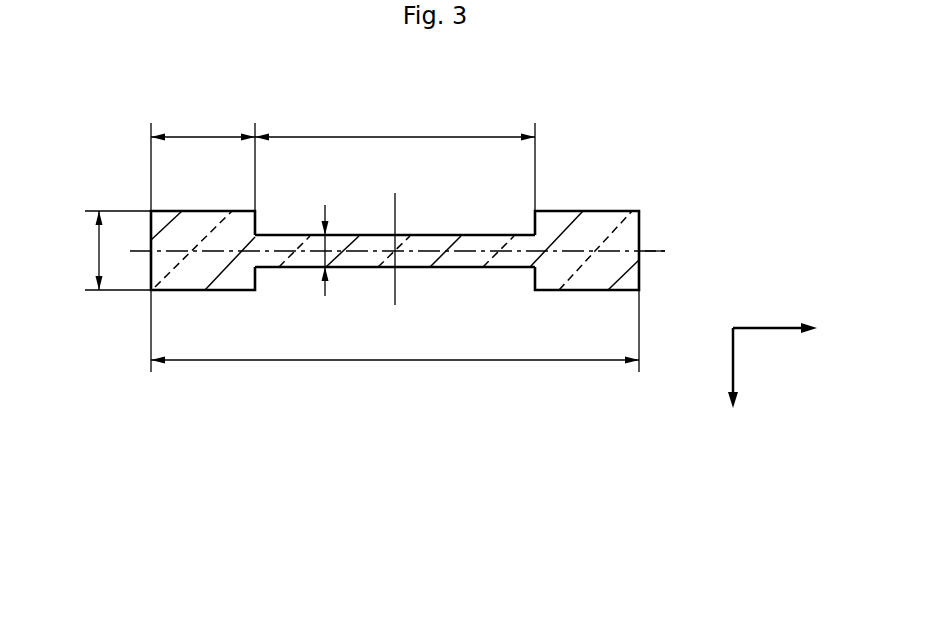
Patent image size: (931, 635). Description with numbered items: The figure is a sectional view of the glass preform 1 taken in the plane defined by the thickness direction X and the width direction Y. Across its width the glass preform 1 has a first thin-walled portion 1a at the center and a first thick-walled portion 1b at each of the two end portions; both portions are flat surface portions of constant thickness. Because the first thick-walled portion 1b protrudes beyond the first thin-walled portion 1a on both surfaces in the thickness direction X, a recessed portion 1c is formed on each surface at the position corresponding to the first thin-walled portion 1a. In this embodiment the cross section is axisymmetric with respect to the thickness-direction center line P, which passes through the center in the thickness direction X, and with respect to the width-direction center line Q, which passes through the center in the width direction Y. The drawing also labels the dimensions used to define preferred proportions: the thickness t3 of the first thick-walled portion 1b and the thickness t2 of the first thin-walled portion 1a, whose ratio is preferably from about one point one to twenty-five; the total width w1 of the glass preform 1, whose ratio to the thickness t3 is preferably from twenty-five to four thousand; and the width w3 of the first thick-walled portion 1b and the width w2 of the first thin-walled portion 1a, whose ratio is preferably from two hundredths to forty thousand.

The glass preform 1 is at (397, 205).
The first thin-walled portion 1a is at (395, 257).
The first thick-walled portion 1b is at (195, 223).
The recessed portion 1c is at (477, 236).
The thickness-direction center line P is at (654, 247).
The width-direction center line Q is at (398, 216).
The thickness of the first thin-walled portion t2 is at (310, 240).
The thickness of the first thick-walled portion t3 is at (98, 250).
The total width of the glass preform w1 is at (393, 360).
The width of the first thin-walled portion w2 is at (389, 133).
The width of the first thick-walled portion w3 is at (203, 133).
The thickness direction X is at (735, 383).
The width direction Y is at (784, 328).